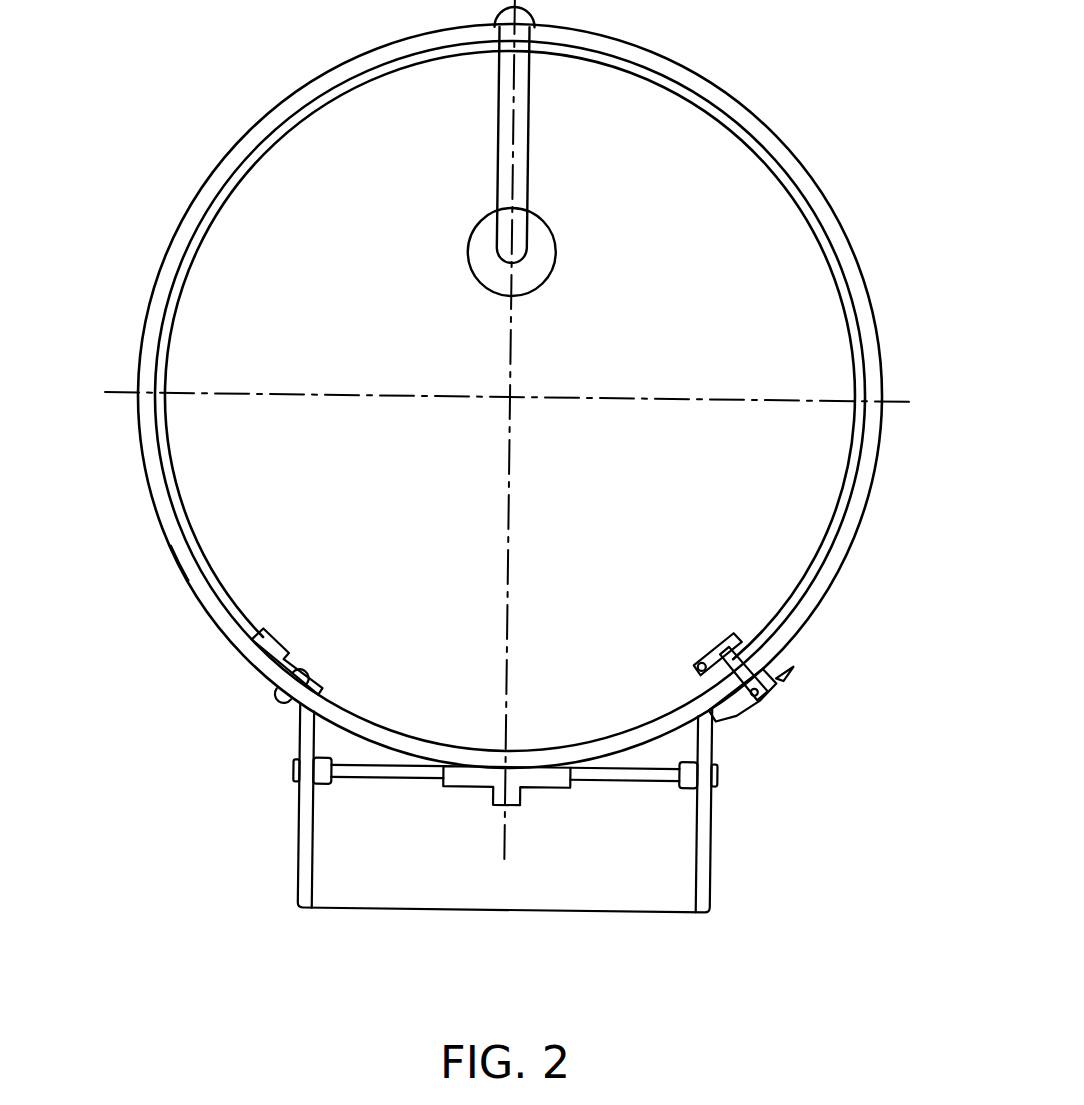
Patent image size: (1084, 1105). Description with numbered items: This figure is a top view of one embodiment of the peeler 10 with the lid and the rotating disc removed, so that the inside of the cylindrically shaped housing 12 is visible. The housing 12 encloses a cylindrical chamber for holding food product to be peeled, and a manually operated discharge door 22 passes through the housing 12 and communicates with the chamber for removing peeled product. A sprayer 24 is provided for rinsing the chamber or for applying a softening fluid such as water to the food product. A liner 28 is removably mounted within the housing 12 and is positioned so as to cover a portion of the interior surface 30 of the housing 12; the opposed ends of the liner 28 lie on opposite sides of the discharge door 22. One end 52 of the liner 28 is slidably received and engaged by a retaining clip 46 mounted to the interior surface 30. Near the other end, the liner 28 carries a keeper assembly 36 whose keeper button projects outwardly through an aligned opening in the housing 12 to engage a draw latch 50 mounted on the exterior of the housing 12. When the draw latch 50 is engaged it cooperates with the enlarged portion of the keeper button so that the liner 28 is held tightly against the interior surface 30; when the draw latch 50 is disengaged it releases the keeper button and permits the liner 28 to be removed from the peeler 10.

The peeler 10 is at (226, 58).
The housing 12 is at (509, 387).
The discharge door 22 is at (505, 830).
The sprayer 24 is at (483, 151).
The liner 28 is at (510, 354).
The interior surface 30 is at (510, 396).
The keeper assembly 36 is at (683, 642).
The retaining clip 46 is at (297, 642).
The draw latch 50 is at (794, 721).
The end of the liner 52 is at (219, 543).